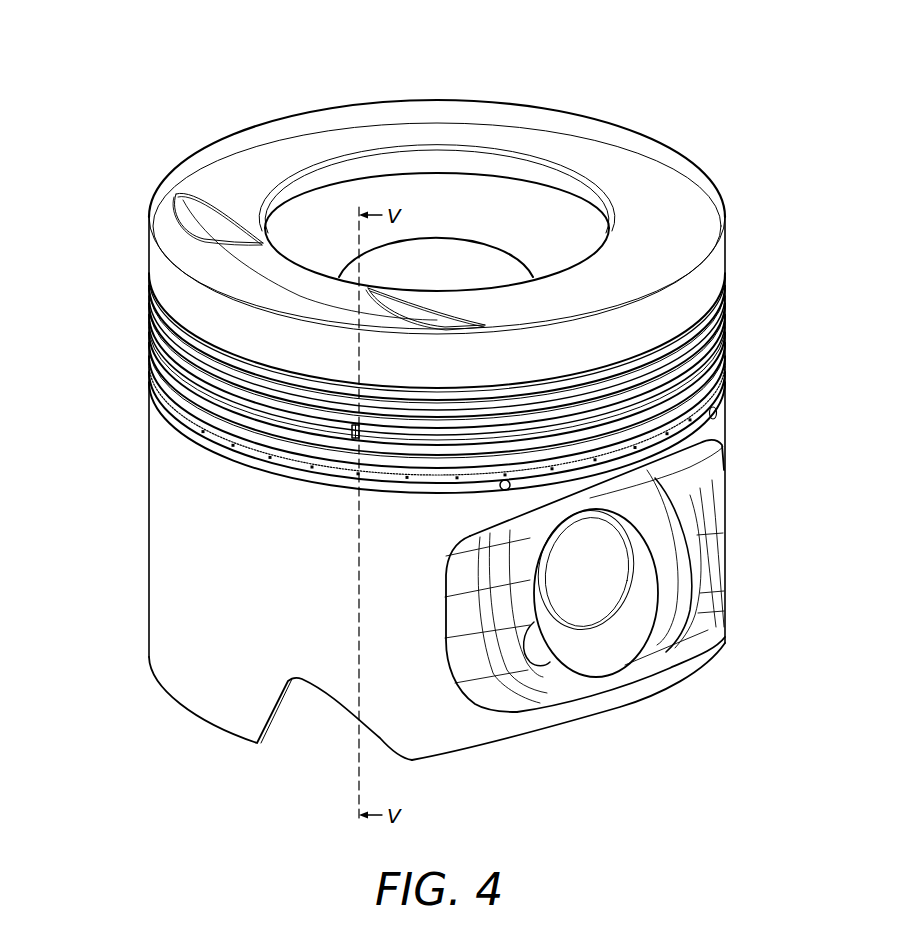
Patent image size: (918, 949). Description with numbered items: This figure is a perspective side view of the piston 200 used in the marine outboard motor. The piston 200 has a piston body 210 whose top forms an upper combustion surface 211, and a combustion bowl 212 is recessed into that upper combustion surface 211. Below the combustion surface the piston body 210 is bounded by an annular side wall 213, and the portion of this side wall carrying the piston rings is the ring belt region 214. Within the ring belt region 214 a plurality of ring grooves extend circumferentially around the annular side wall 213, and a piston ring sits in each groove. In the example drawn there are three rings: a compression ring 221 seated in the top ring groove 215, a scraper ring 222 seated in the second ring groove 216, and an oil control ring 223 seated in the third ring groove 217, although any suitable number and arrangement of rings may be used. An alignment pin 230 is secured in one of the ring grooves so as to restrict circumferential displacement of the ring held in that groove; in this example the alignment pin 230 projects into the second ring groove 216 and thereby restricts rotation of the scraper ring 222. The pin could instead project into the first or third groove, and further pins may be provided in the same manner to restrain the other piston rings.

The piston 200 is at (175, 62).
The piston body 210 is at (162, 579).
The upper combustion surface 211 is at (596, 138).
The combustion bowl 212 is at (370, 191).
The annular side wall 213 is at (718, 268).
The ring belt region 214 is at (81, 283).
The top ring groove 215 is at (163, 342).
The second ring groove 216 is at (177, 382).
The third ring groove 217 is at (217, 449).
The compression ring 221 is at (718, 323).
The scraper ring 222 is at (718, 367).
The oil control ring 223 is at (703, 410).
The alignment pin 230 is at (355, 438).